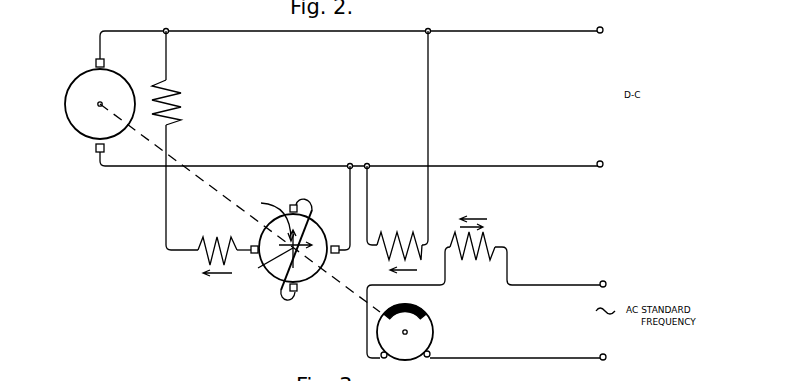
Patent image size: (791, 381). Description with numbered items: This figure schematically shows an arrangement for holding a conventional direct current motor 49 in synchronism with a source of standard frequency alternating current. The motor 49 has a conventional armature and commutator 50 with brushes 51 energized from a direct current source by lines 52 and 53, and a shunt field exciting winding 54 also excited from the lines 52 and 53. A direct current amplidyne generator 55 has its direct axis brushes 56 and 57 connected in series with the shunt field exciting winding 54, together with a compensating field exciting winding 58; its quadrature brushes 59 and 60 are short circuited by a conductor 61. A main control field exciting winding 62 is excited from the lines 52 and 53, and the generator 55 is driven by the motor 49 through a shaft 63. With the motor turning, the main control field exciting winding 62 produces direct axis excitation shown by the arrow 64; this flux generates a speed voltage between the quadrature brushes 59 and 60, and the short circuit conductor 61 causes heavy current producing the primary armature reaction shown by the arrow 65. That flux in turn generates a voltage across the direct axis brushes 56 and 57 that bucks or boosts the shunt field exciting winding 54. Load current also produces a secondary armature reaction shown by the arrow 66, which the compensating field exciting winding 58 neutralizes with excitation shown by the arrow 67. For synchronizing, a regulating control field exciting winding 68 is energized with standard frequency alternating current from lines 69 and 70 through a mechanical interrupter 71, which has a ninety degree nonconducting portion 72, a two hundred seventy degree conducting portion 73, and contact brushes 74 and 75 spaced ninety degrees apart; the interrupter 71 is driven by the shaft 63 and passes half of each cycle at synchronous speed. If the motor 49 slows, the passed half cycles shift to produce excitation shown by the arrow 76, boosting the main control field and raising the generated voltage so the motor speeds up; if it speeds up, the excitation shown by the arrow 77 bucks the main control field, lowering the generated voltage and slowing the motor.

The direct current motor 49 is at (63, 98).
The armature and commutator 50 is at (119, 78).
The brushes 51 is at (95, 63).
The line 52 is at (600, 33).
The line 53 is at (600, 161).
The shunt field exciting winding 54 is at (184, 101).
The direct current amplidyne generator 55 is at (268, 279).
The direct axis brush 56 is at (254, 245).
The direct axis brush 57 is at (336, 245).
The compensating field exciting winding 58 is at (214, 240).
The quadrature brush 59 is at (292, 204).
The quadrature brush 60 is at (297, 292).
The conductor 61 is at (307, 208).
The main control field exciting winding 62 is at (389, 237).
The shaft 63 is at (228, 194).
The arrow 64 is at (406, 271).
The arrow 65 is at (281, 230).
The arrow 66 is at (266, 262).
The arrow 67 is at (220, 277).
The regulating control field exciting winding 68 is at (468, 258).
The line 69 is at (603, 281).
The line 70 is at (603, 360).
The mechanical interrupter 71 is at (436, 318).
The nonconducting portion 72 is at (414, 306).
The conducting portion 73 is at (408, 360).
The contact brush 74 is at (381, 348).
The contact brush 75 is at (431, 352).
The arrow 76 is at (473, 210).
The arrow 77 is at (480, 226).